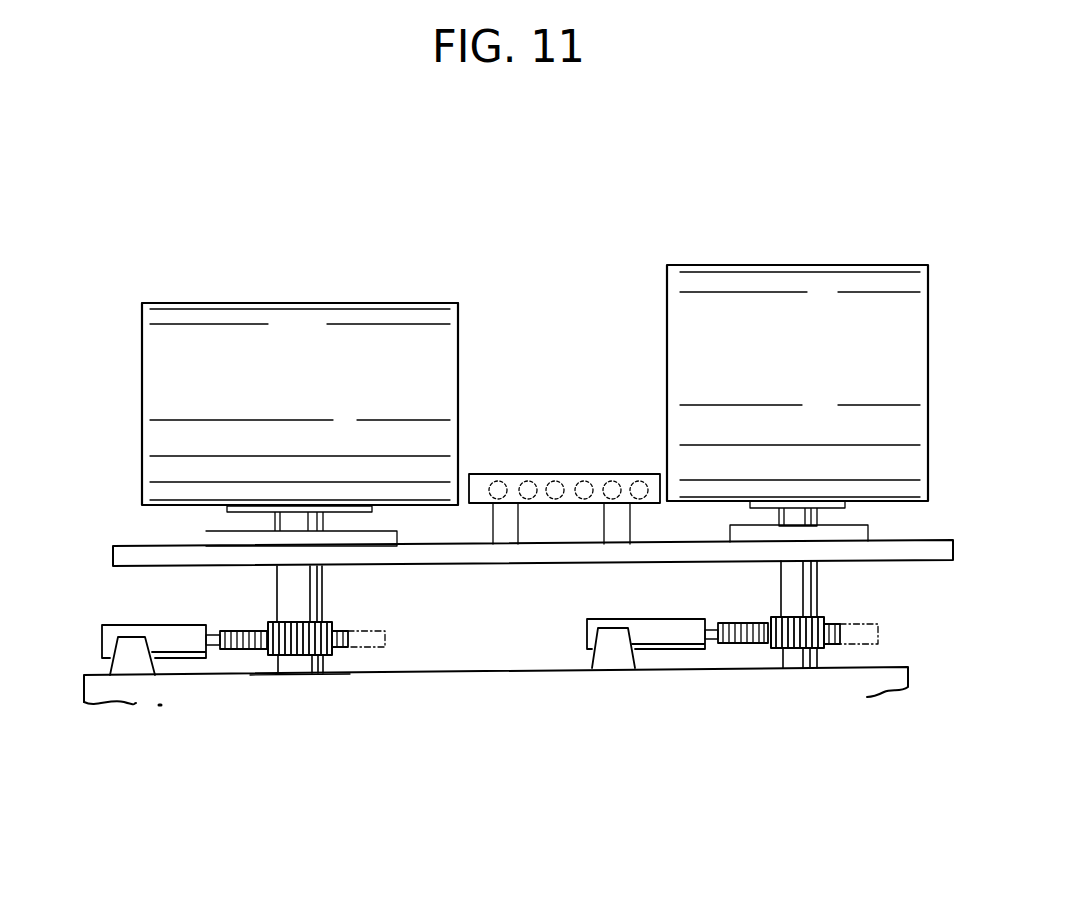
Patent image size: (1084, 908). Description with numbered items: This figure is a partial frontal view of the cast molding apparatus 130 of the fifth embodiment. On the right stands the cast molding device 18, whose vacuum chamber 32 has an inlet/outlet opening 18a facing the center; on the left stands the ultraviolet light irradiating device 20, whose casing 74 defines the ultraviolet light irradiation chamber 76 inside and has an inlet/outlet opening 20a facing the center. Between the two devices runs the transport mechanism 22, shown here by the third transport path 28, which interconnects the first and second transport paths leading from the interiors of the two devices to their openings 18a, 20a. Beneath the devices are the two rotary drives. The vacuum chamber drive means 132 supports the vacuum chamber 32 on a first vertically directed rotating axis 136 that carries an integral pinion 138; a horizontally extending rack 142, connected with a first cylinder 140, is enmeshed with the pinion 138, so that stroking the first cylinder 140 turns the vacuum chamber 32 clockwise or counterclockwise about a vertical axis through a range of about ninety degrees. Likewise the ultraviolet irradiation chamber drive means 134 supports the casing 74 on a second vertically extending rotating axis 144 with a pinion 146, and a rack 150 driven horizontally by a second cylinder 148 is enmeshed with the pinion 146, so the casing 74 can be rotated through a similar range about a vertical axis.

The cast molding apparatus 130 is at (753, 112).
The cast molding device 18 is at (775, 185).
The inlet/outlet opening 18a is at (671, 338).
The ultraviolet light irradiating device 20 is at (378, 265).
The inlet/outlet opening 20a is at (461, 346).
The transport mechanism 22 is at (567, 428).
The third transport path 28 is at (520, 472).
The vacuum chamber 32 is at (827, 288).
The casing 74 is at (225, 302).
The ultraviolet light irradiation chamber 76 is at (425, 302).
The vacuum chamber drive means 132 is at (917, 687).
The ultraviolet irradiation chamber drive means 134 is at (265, 727).
The first rotating axis 136 is at (790, 582).
The pinion 138 is at (773, 648).
The first cylinder 140 is at (667, 642).
The rack 142 is at (840, 652).
The second rotating axis 144 is at (313, 590).
The pinion 146 is at (313, 657).
The second cylinder 148 is at (173, 648).
The rack 150 is at (343, 648).